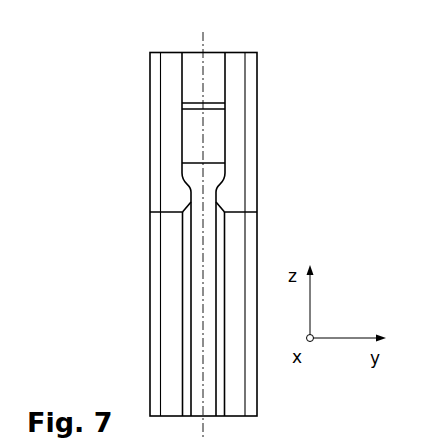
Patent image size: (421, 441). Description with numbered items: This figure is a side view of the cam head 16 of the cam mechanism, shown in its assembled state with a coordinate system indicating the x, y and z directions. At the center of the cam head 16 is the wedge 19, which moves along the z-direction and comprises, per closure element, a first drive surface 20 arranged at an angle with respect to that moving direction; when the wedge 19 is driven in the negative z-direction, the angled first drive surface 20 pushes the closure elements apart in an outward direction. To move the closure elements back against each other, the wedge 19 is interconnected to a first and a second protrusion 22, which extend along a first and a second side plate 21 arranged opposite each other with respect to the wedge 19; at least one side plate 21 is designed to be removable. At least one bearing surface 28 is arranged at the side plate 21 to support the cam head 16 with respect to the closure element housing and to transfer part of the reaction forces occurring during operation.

The cam head 16 is at (282, 74).
The wedge 19 is at (192, 133).
The side plate 21 is at (145, 149).
The protrusion 22 is at (180, 231).
The first drive surface 20 is at (198, 304).
The bearing surface 28 is at (165, 318).